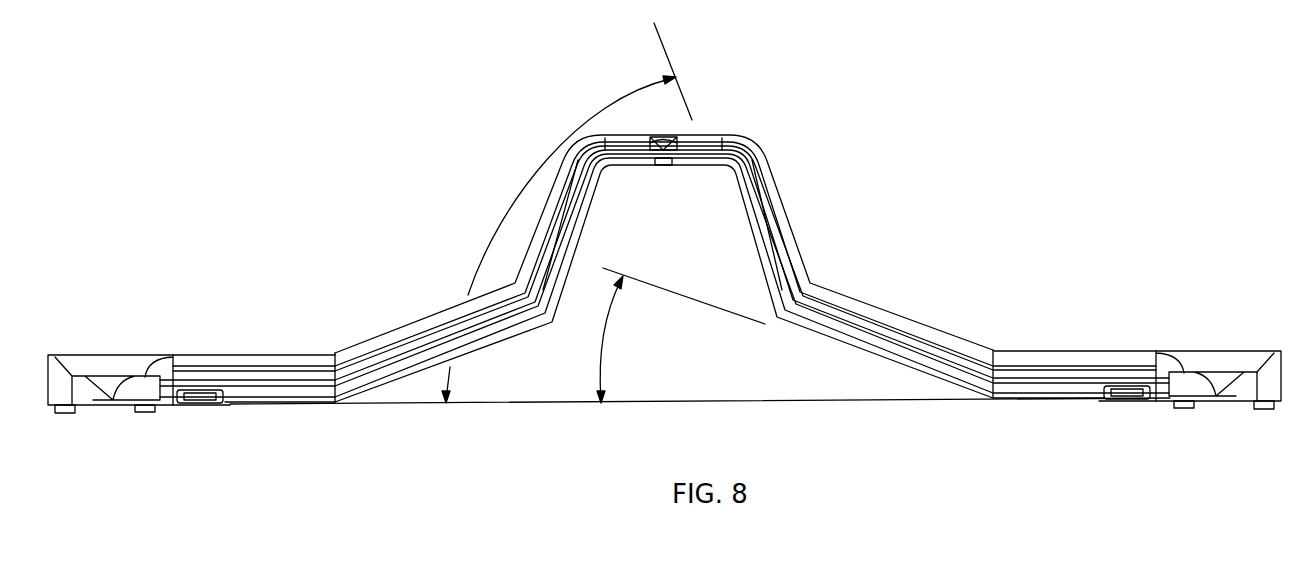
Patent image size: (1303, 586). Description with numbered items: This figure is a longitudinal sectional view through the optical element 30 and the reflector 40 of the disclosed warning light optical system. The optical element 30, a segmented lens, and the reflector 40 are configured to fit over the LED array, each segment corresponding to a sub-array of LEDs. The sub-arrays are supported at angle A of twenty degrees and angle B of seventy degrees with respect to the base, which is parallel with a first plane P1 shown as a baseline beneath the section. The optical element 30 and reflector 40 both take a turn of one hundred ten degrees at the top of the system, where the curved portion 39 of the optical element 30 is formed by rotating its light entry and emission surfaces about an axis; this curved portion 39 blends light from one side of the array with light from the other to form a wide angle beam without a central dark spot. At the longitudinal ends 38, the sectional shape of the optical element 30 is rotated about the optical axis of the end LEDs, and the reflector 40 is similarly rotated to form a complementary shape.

The optical element 30 is at (878, 308).
The longitudinal ends 38 is at (140, 385).
The curved portion 39 is at (740, 152).
The reflector 40 is at (1240, 355).
The angle A is at (608, 338).
The angle B is at (520, 196).
The first plane P1 is at (790, 404).